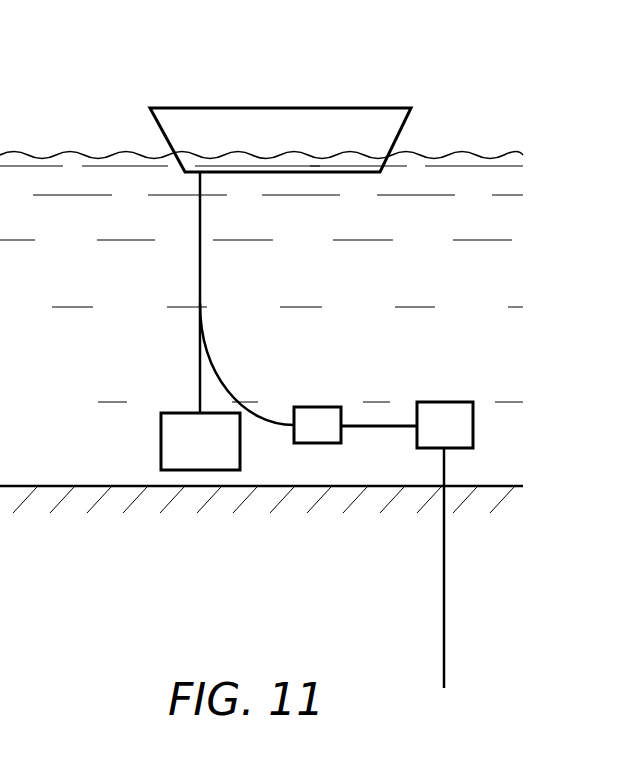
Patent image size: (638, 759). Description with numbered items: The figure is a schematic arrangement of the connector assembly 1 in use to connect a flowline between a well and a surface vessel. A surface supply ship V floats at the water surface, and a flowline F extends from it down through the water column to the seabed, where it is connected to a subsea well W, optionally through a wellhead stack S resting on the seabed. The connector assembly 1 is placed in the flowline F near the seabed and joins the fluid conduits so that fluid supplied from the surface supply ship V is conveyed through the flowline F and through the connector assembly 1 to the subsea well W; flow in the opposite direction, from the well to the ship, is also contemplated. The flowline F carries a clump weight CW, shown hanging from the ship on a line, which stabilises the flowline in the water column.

The surface supply ship V is at (363, 87).
The clump weight CW is at (161, 428).
The connector assembly 1 is at (316, 407).
The flowline F is at (377, 426).
The wellhead stack S is at (444, 402).
The subsea well W is at (444, 630).